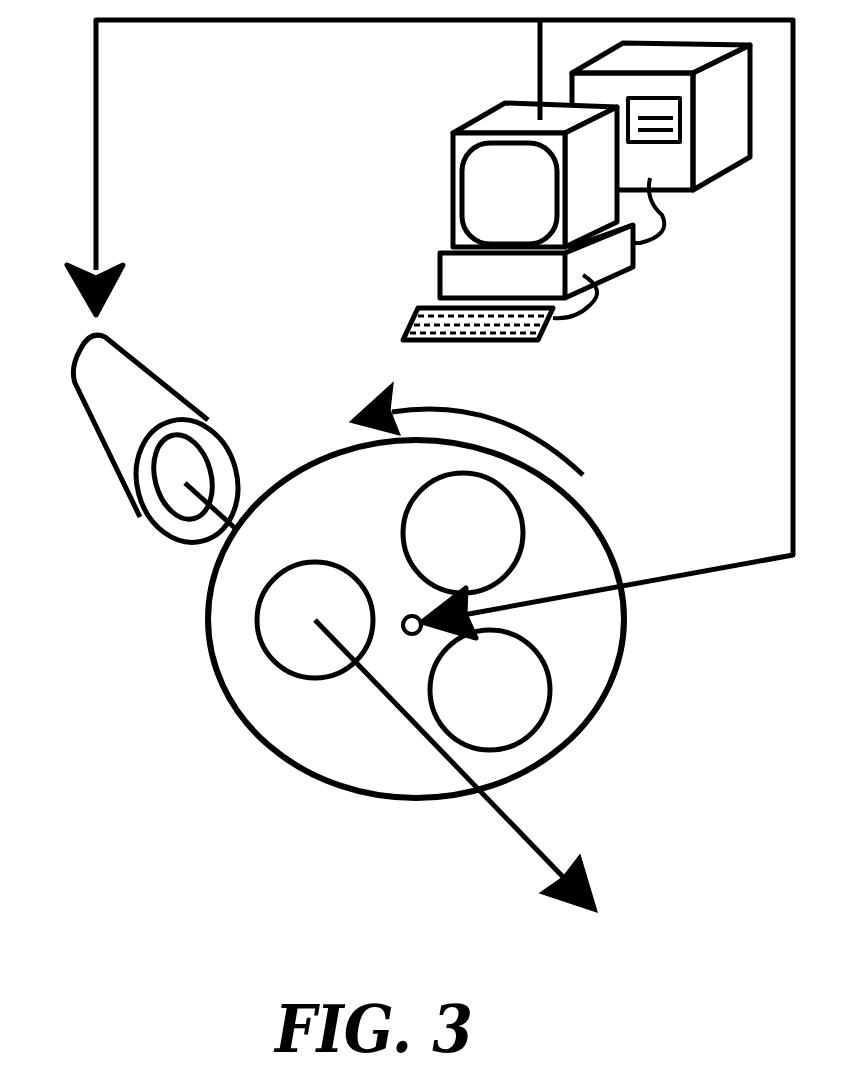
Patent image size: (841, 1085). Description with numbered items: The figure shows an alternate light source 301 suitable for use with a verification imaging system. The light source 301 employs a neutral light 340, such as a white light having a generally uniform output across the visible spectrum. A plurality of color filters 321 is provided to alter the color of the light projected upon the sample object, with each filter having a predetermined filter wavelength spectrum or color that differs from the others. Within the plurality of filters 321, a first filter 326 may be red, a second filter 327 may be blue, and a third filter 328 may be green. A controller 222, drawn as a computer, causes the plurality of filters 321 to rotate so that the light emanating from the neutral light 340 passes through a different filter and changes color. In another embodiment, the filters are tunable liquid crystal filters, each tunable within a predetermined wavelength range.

The controller 222 is at (455, 155).
The light source 301 is at (130, 427).
The neutral light 340 is at (178, 507).
The plurality of color filters 321 is at (630, 620).
The third filter 328 is at (447, 533).
The second filter 327 is at (283, 635).
The first filter 326 is at (527, 697).